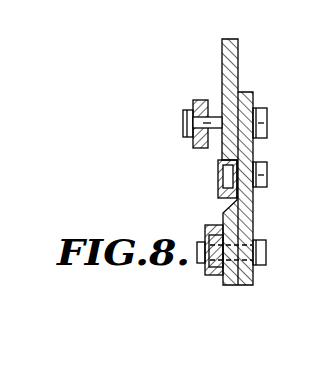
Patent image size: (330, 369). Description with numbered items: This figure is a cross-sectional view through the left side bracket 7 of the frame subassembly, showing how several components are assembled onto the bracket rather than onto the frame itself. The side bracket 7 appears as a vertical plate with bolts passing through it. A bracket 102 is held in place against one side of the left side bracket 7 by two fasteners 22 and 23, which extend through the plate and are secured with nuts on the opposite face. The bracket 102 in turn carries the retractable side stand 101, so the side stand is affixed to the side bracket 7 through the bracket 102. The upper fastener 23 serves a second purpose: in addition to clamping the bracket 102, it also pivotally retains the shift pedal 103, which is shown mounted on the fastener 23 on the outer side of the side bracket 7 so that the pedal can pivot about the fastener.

The side bracket 7 is at (214, 47).
The shift pedal 103 is at (198, 99).
The fastener 23 is at (182, 127).
The fastener 22 is at (218, 176).
The retractable side stand 101 is at (213, 277).
The bracket 102 is at (242, 285).